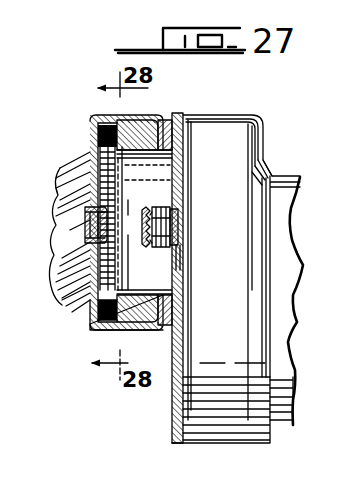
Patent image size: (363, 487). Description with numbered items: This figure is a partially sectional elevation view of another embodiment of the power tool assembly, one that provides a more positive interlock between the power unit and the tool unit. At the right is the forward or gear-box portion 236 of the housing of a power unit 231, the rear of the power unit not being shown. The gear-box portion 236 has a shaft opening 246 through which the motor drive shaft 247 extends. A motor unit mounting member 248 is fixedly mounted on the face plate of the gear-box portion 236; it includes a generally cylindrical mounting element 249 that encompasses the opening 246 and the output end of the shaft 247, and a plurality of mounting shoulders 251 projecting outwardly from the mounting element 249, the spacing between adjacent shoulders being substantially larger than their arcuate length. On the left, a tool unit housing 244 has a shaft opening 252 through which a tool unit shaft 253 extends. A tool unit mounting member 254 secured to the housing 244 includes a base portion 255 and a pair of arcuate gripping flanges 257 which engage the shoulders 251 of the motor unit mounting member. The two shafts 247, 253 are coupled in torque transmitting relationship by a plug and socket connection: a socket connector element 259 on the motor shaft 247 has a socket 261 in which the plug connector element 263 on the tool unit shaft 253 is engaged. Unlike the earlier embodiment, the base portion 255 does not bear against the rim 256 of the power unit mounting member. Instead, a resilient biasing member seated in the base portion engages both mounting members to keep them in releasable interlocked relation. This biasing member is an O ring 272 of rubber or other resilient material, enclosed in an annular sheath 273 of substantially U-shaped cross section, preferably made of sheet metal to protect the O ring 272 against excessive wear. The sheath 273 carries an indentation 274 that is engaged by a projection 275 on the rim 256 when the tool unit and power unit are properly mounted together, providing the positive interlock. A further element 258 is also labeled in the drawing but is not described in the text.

The power unit 231 is at (286, 172).
The gear-box portion 236 is at (225, 128).
The tool unit housing 244 is at (92, 285).
The shaft opening 246 is at (184, 212).
The motor drive shaft 247 is at (178, 229).
The motor unit mounting member 248 is at (167, 126).
The mounting element 249 is at (131, 302).
The mounting shoulders 251 is at (148, 116).
The shaft opening 252 is at (96, 183).
The tool unit shaft 253 is at (97, 218).
The tool unit mounting member 254 is at (93, 112).
The base portion 255 is at (93, 331).
The rim 256 is at (133, 325).
The gripping flanges 257 is at (164, 118).
The upper plate 258 is at (144, 165).
The socket connector element 259 is at (189, 243).
The socket 261 is at (186, 218).
The plug connector element 263 is at (97, 246).
The O ring 272 is at (90, 309).
The annular sheath 273 is at (113, 119).
The indentation 274 is at (160, 206).
The projection 275 is at (131, 216).